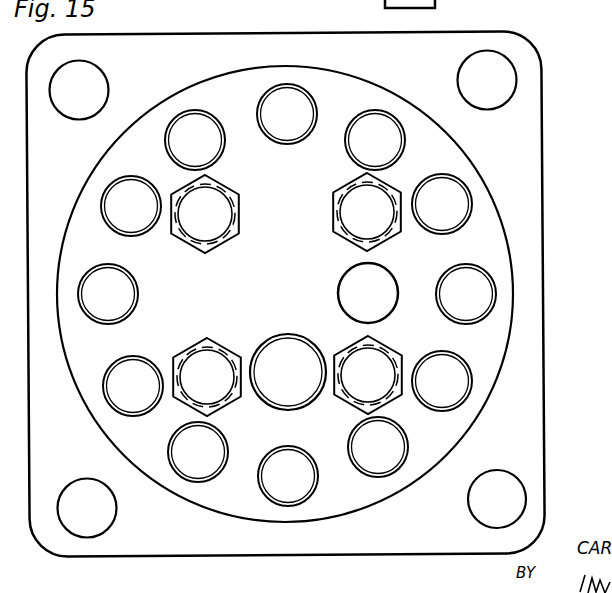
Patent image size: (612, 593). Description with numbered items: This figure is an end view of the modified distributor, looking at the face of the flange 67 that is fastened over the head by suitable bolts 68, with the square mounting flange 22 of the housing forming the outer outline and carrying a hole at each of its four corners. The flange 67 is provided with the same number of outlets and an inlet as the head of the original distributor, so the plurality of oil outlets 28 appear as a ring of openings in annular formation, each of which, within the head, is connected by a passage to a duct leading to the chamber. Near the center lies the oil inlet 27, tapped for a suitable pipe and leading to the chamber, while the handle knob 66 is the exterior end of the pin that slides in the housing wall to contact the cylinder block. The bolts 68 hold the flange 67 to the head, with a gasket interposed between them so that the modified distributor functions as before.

The mounting flange 22 is at (538, 170).
The flange 67 is at (503, 357).
The oil outlets 28 is at (391, 142).
The handle knob 66 is at (381, 279).
The oil inlet 27 is at (270, 390).
The bolts 68 is at (346, 200).